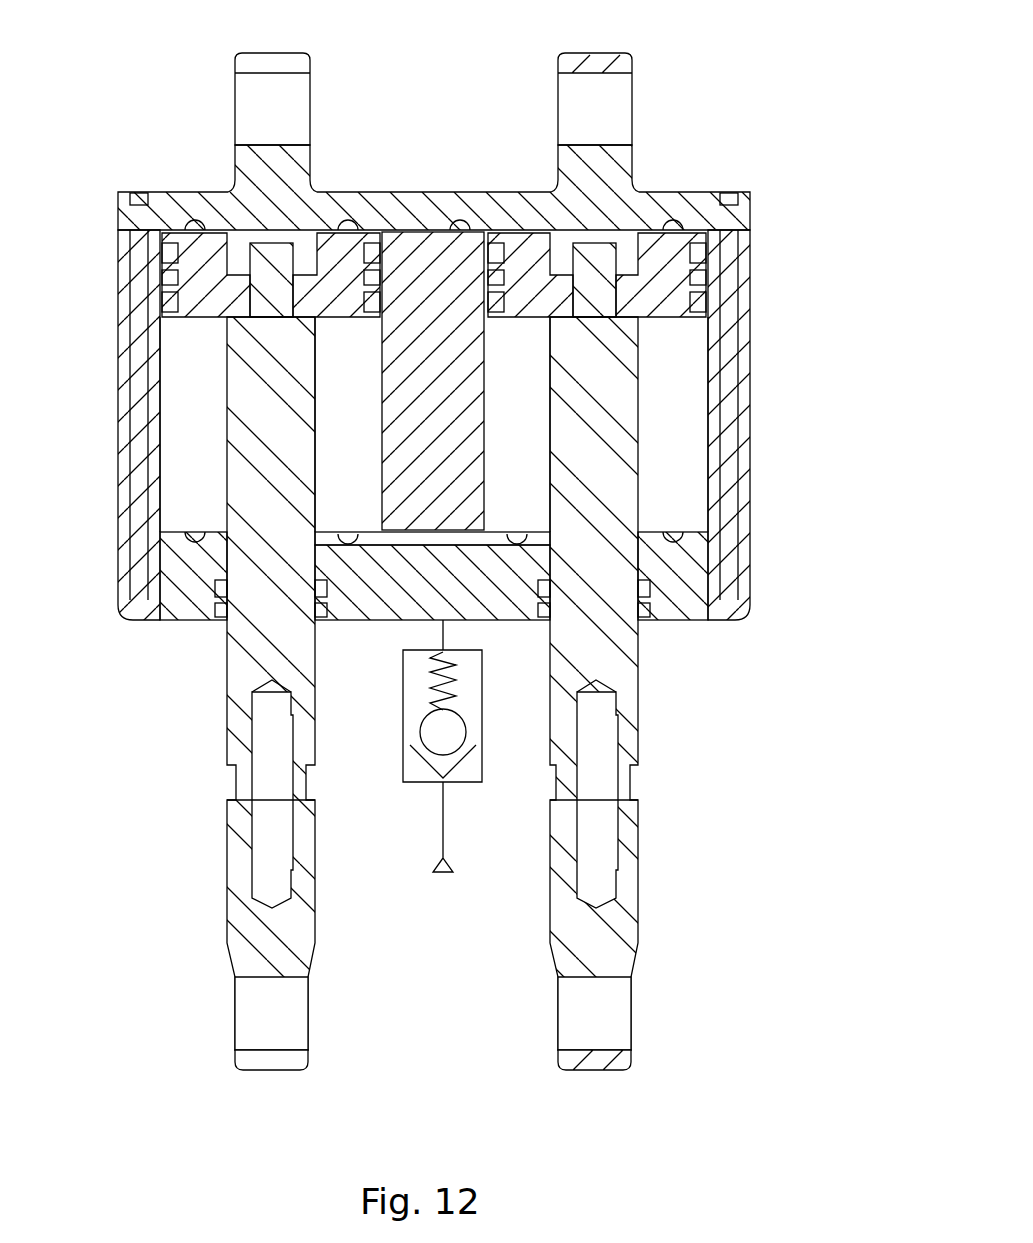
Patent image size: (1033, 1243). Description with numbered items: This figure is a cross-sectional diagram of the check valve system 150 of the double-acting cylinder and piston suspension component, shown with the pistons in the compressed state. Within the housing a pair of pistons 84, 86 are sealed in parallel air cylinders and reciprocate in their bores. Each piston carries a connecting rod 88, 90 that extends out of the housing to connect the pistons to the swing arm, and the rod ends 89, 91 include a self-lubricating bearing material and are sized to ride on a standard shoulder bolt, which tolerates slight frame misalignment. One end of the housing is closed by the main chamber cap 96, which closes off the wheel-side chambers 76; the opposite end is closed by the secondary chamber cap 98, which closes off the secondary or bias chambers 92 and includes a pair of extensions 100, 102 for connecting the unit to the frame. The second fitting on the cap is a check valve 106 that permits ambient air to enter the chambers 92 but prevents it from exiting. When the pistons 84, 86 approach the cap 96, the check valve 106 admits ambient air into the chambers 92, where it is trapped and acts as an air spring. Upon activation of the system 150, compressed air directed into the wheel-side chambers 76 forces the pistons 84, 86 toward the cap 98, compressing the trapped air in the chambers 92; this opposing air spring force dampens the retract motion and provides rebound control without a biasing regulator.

The check valve system 150 is at (727, 123).
The secondary chamber cap 98 is at (690, 193).
The extension 102 is at (292, 65).
The extension 100 is at (617, 62).
The secondary chamber 92 is at (302, 240).
The piston 86 is at (165, 290).
The piston 84 is at (670, 270).
The wheel-side chamber 76 is at (700, 408).
The main chamber cap 96 is at (690, 605).
The connecting rod 90 is at (228, 728).
The connecting rod 88 is at (638, 725).
The rod end 91 is at (318, 920).
The rod end 89 is at (638, 890).
The check valve 106 is at (403, 826).